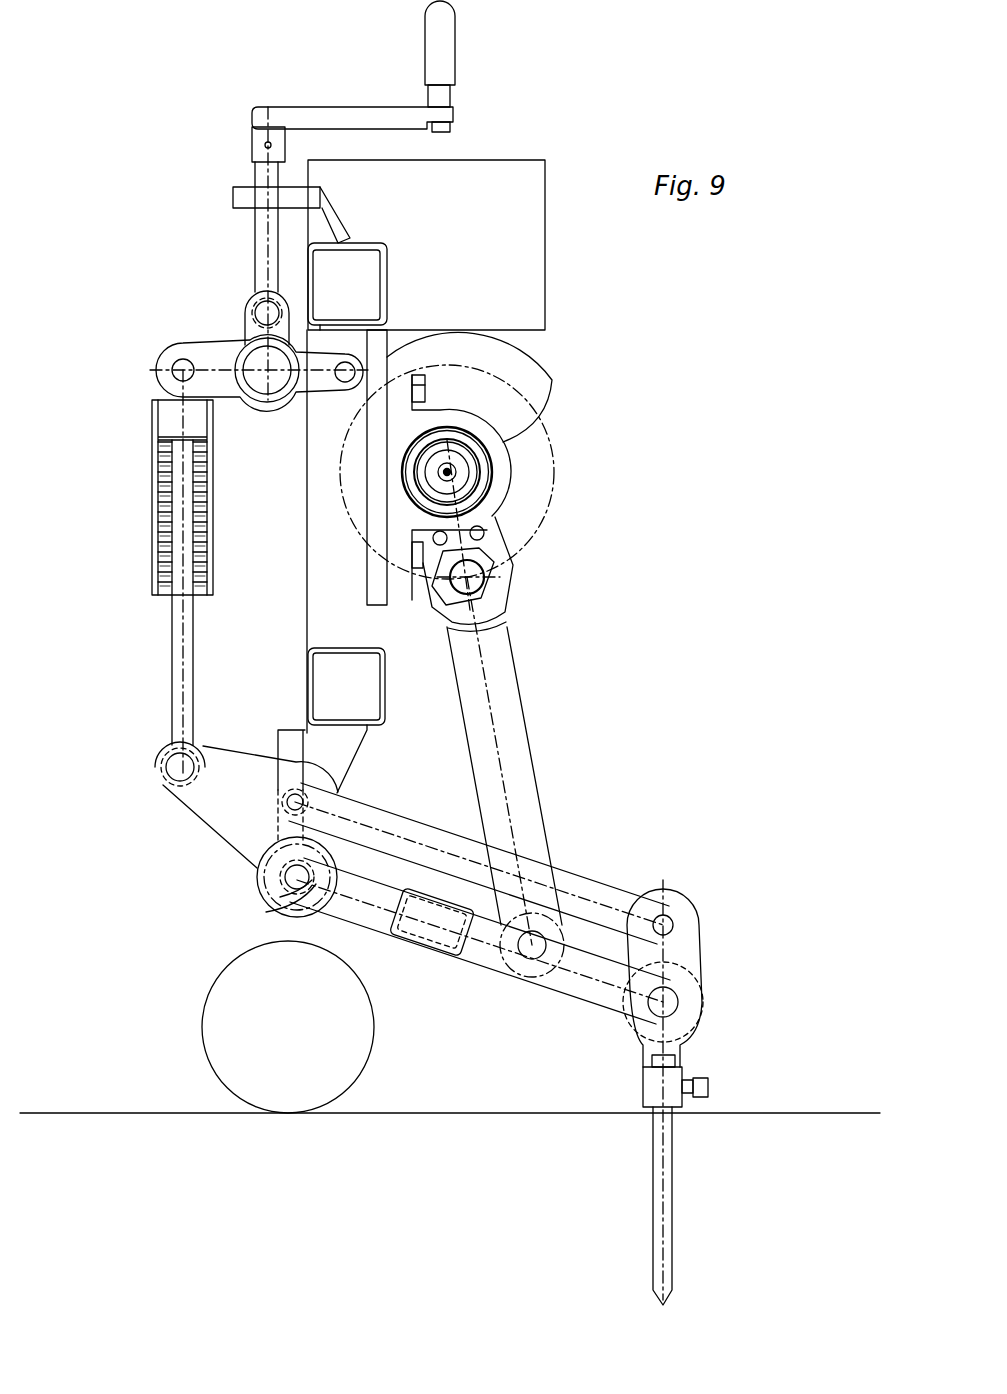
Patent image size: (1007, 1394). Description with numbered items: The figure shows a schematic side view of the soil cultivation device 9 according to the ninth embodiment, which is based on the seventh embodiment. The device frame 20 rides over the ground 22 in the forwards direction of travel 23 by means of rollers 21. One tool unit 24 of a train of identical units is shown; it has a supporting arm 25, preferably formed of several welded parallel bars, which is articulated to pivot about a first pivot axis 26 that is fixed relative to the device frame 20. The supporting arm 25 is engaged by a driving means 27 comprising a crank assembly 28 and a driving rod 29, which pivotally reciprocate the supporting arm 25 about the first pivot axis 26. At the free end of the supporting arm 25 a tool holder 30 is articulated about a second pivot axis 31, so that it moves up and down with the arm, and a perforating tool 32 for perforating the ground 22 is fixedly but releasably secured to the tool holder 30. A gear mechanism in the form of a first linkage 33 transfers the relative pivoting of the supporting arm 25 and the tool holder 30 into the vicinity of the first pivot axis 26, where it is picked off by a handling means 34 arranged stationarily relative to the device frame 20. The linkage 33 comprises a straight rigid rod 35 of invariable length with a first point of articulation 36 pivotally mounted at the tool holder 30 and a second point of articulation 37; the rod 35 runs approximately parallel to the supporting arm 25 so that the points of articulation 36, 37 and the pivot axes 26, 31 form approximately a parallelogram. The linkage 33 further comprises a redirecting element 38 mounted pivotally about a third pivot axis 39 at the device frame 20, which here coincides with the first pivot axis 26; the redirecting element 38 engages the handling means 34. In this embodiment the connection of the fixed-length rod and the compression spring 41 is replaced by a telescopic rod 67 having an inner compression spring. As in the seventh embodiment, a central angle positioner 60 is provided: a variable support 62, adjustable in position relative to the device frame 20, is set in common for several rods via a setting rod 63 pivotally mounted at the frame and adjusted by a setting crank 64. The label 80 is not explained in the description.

The soil cultivation device 9 is at (654, 476).
The device frame 20 is at (307, 613).
The rollers 21 is at (360, 1048).
The ground 22 is at (427, 1130).
The forwards direction of travel 23 is at (775, 636).
The tool unit 24 is at (683, 827).
The supporting arm 25 is at (480, 962).
The first pivot axis 26 is at (280, 907).
The driving means 27 is at (537, 537).
The crank assembly 28 is at (545, 392).
The driving rod 29 is at (508, 712).
The tool holder 30 is at (688, 952).
The second pivot axis 31 is at (667, 1000).
The perforating tool 32 is at (672, 1172).
The first linkage 33 is at (580, 860).
The handling means 34 is at (185, 207).
The rigid rod 35 is at (417, 827).
The first point of articulation 36 is at (667, 923).
The second point of articulation 37 is at (292, 800).
The redirecting element 38 is at (227, 813).
The third pivot axis 39 is at (317, 900).
The compression spring 41 is at (167, 485).
The central angle positioner 60 is at (218, 133).
The variable support 62 is at (212, 348).
The setting rod 63 is at (277, 400).
The setting crank 64 is at (315, 108).
The telescopic rod 67 is at (172, 672).
The distance reference 80 is at (600, 1041).